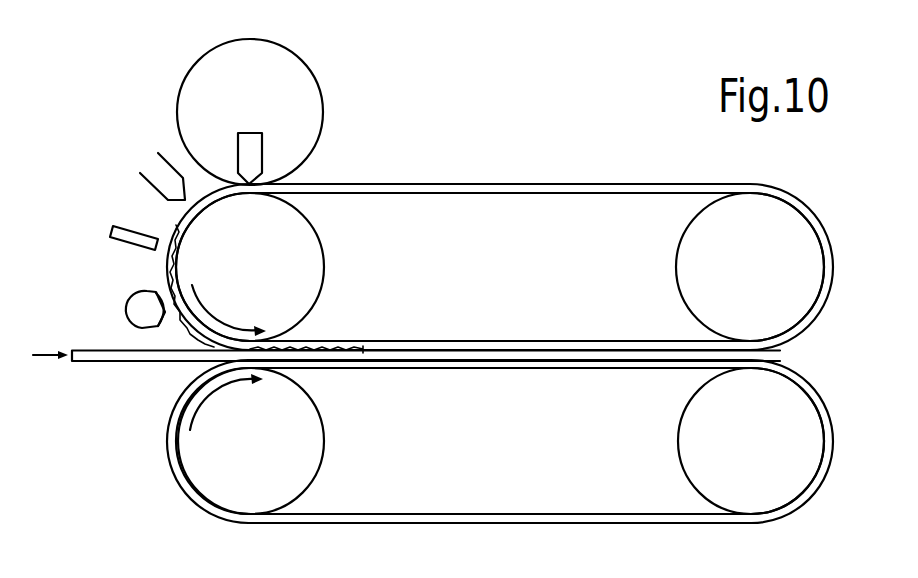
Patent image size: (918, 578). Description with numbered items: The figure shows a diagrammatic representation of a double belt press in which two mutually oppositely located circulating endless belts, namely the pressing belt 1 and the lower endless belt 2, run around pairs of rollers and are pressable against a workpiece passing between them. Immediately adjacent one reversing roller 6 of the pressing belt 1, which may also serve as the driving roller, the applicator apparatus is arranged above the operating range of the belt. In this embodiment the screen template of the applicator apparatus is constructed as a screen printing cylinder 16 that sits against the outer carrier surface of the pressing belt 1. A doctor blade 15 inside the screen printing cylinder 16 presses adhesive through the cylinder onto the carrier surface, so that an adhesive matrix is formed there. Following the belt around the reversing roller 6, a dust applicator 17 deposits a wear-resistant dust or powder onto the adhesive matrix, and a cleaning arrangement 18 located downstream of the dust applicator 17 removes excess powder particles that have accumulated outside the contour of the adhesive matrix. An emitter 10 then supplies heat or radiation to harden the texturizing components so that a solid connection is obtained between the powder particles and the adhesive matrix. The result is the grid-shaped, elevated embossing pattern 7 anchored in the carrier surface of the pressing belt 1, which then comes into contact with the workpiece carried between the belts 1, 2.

The pressing belt 1 is at (541, 167).
The endless belt 2 is at (303, 527).
The reversing roller 6 is at (310, 282).
The embossing pattern 7 is at (200, 331).
The emitter 10 is at (140, 307).
The doctor blade 15 is at (250, 140).
The screen printing cylinder 16 is at (297, 68).
The dust applicator 17 is at (145, 163).
The cleaning arrangement 18 is at (112, 230).